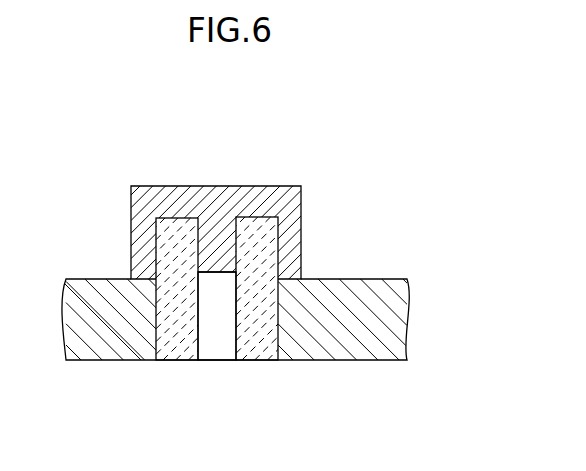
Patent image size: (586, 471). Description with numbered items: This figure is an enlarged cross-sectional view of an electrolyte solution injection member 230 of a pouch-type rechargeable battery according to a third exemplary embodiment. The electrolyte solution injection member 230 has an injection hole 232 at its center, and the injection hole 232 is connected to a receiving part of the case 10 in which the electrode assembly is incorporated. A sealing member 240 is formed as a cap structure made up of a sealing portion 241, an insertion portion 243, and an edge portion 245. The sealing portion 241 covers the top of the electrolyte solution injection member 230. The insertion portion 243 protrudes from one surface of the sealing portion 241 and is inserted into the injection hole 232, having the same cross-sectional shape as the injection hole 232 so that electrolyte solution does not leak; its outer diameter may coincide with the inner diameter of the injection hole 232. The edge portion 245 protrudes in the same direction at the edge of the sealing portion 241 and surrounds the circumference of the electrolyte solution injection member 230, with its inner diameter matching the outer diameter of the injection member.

The case 10 is at (344, 340).
The electrolyte solution injection member 230 is at (182, 245).
The injection hole 232 is at (221, 337).
The sealing member 240 is at (185, 229).
The sealing portion 241 is at (170, 200).
The insertion portion 243 is at (212, 236).
The edge portion 245 is at (294, 238).